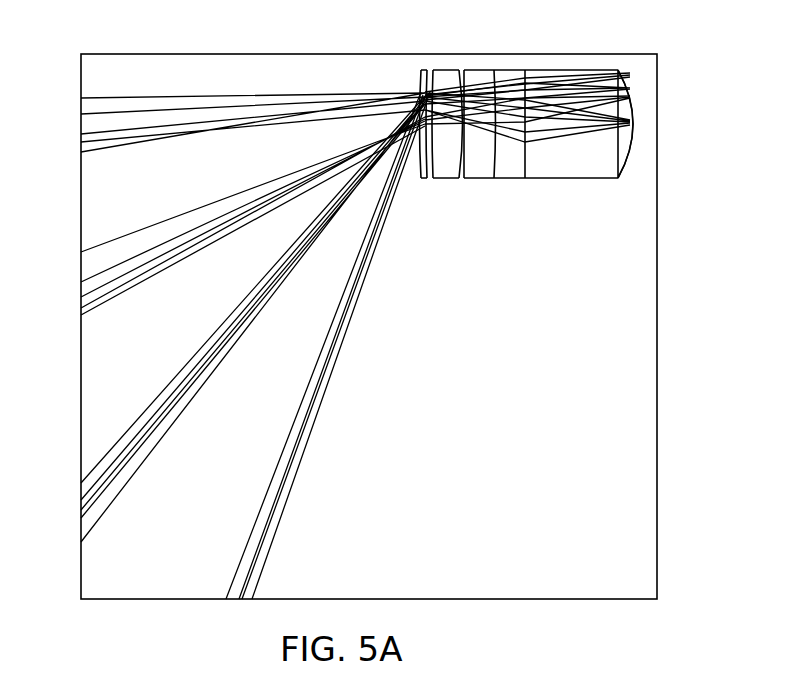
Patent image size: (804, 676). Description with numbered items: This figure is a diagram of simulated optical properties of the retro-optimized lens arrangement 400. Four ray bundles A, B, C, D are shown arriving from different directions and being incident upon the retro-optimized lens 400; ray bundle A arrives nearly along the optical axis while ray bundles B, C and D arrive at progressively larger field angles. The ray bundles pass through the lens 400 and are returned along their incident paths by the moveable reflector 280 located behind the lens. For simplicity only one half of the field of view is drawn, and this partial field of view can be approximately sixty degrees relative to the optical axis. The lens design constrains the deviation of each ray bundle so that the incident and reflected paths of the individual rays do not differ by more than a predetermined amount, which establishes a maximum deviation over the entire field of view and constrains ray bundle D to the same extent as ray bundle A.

The retro-optimized lens arrangement 400 is at (563, 70).
The moveable reflector 280 is at (634, 122).
The ray bundle A is at (98, 114).
The ray bundle B is at (98, 272).
The ray bundle C is at (93, 485).
The ray bundle D is at (245, 577).